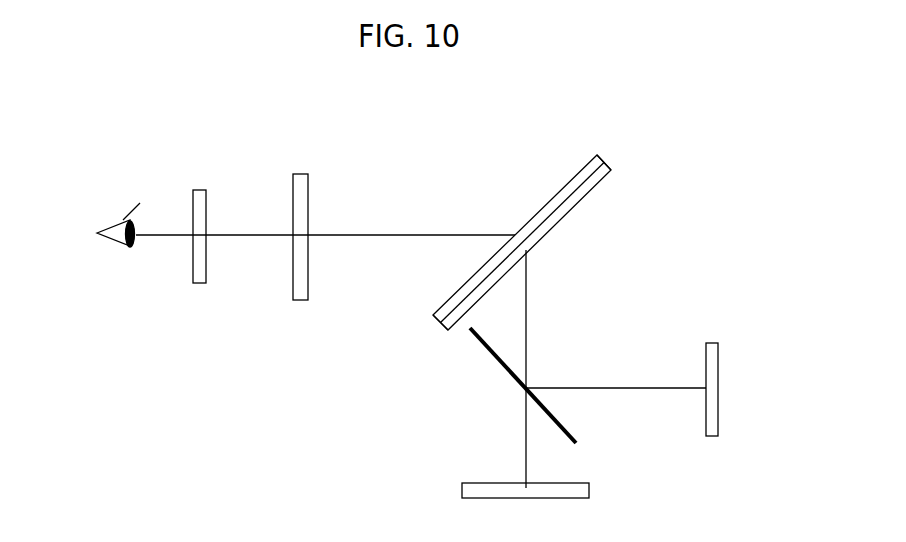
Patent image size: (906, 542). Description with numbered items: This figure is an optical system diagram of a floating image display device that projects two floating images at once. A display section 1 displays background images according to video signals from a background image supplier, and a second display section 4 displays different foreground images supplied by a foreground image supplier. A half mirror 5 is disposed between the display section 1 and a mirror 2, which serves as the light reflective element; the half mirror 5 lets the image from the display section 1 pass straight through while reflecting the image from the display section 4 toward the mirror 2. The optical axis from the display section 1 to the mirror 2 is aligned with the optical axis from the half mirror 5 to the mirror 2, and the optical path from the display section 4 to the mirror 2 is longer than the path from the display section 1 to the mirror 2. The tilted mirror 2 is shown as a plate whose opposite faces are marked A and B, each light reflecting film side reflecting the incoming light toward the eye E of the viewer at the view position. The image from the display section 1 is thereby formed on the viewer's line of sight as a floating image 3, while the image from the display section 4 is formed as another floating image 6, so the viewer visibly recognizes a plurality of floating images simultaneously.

The display section 1 is at (473, 483).
The mirror 2 is at (582, 168).
The floating image 3 is at (302, 174).
The display section 4 is at (706, 357).
The half mirror 5 is at (497, 362).
The floating image 6 is at (200, 190).
The first surface of optical element A is at (436, 324).
The second surface of optical element B is at (614, 156).
The eye E is at (121, 220).